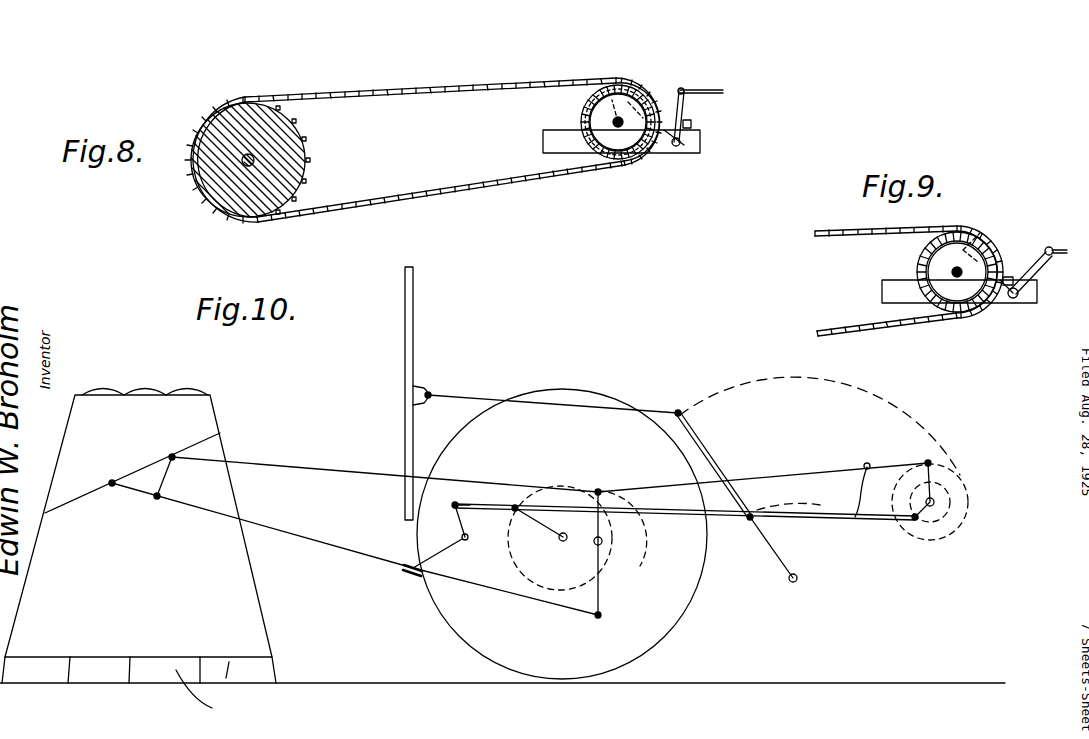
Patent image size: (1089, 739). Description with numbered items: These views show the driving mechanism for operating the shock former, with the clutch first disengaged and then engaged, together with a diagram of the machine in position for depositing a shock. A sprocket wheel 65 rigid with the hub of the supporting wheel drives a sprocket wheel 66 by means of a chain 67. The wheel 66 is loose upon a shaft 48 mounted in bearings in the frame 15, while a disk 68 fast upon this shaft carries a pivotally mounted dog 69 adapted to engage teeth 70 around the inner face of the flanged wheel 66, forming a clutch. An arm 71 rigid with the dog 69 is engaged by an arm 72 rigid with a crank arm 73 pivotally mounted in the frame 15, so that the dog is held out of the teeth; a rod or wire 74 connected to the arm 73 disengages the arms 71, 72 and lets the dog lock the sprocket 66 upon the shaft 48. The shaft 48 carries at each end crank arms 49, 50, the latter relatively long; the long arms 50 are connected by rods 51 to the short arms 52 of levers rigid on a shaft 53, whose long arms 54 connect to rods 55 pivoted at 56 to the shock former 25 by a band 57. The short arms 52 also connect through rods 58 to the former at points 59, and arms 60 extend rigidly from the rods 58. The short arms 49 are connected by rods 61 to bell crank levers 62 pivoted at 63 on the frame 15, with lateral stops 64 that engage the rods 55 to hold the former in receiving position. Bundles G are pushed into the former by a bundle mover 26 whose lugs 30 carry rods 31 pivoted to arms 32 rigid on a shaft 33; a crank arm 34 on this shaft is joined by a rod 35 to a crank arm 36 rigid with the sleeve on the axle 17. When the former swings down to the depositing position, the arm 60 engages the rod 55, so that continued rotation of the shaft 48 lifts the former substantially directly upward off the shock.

In FIG. 8, the frame 15 is at (555, 138).
In FIG. 9, the frame 15 is at (959, 291).
In FIG. 8, the axle 17 is at (254, 163).
In FIG. 10, the axle 17 is at (565, 545).
In FIG. 10, the shock former 25 is at (262, 624).
In FIG. 10, the bundle mover 26 is at (413, 345).
In FIG. 10, the lugs 30 is at (432, 390).
In FIG. 10, the rods 31 is at (567, 410).
In FIG. 10, the arms 32 is at (702, 445).
In FIG. 10, the shaft 33 is at (790, 582).
In FIG. 10, the crank arm 34 is at (765, 545).
In FIG. 10, the rod 35 is at (650, 512).
In FIG. 10, the crank arm 36 is at (533, 525).
In FIG. 8, the shaft 48 is at (608, 150).
In FIG. 9, the shaft 48 is at (958, 290).
In FIG. 10, the shaft 48 is at (940, 503).
In FIG. 10, the crank arms 49 is at (940, 512).
In FIG. 10, the crank arms 50 is at (935, 465).
In FIG. 10, the rods 51 is at (858, 520).
In FIG. 10, the short arms 52 is at (603, 543).
In FIG. 10, the shaft 53 is at (600, 520).
In FIG. 10, the long arms 54 is at (602, 585).
In FIG. 10, the rods 55 is at (262, 525).
In FIG. 10, the pivots 56 is at (111, 488).
In FIG. 10, the band 57 is at (212, 437).
In FIG. 10, the rods 58 is at (350, 462).
In FIG. 10, the points of connection 59 is at (162, 439).
In FIG. 10, the arms 60 is at (167, 481).
In FIG. 10, the rods 61 is at (640, 512).
In FIG. 10, the bell crank levers 62 is at (450, 522).
In FIG. 10, the pivot 63 is at (468, 540).
In FIG. 10, the stops 64 is at (408, 575).
In FIG. 8, the sprocket wheel 65 is at (298, 153).
In FIG. 8, the sprocket wheel 66 is at (606, 90).
In FIG. 8, the chain 67 is at (478, 88).
In FIG. 9, the chain 67 is at (836, 236).
In FIG. 8, the disk 68 is at (626, 142).
In FIG. 9, the disk 68 is at (985, 300).
In FIG. 8, the dog 69 is at (646, 100).
In FIG. 9, the dog 69 is at (982, 248).
In FIG. 8, the teeth 70 is at (632, 95).
In FIG. 9, the teeth 70 is at (935, 300).
In FIG. 8, the arm 71 is at (684, 92).
In FIG. 9, the arm 71 is at (1028, 270).
In FIG. 8, the arm 72 is at (692, 124).
In FIG. 9, the arm 72 is at (1016, 280).
In FIG. 8, the crank arm 73 is at (685, 143).
In FIG. 9, the crank arm 73 is at (1018, 298).
In FIG. 8, the rod or wire 74 is at (724, 91).
In FIG. 9, the rod or wire 74 is at (1058, 256).
In FIG. 10, the bundles of grain G is at (203, 699).